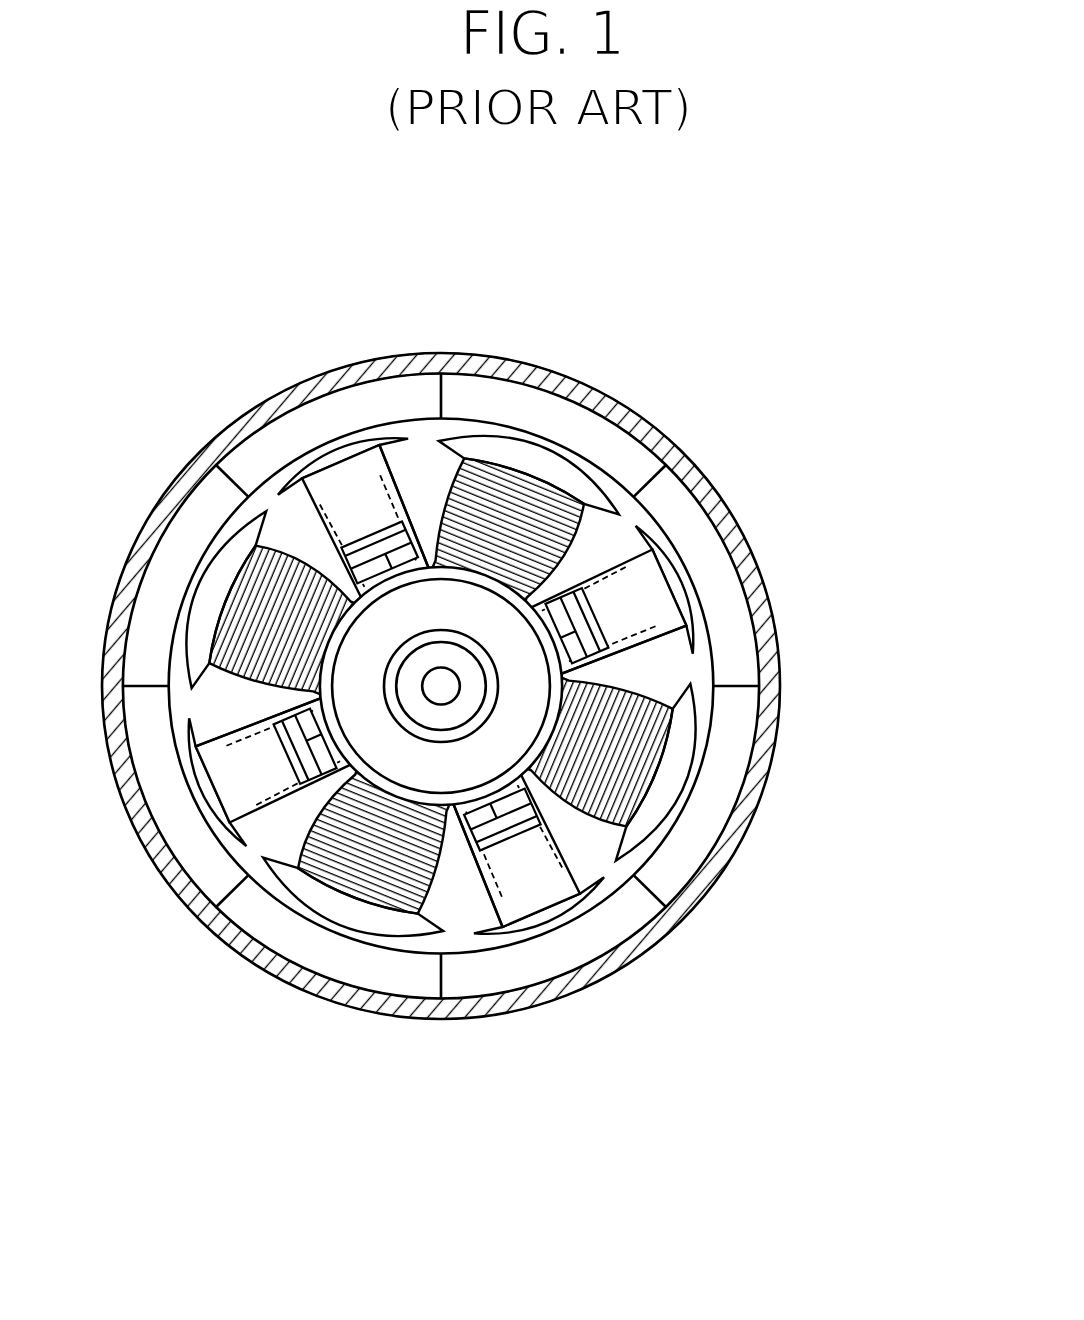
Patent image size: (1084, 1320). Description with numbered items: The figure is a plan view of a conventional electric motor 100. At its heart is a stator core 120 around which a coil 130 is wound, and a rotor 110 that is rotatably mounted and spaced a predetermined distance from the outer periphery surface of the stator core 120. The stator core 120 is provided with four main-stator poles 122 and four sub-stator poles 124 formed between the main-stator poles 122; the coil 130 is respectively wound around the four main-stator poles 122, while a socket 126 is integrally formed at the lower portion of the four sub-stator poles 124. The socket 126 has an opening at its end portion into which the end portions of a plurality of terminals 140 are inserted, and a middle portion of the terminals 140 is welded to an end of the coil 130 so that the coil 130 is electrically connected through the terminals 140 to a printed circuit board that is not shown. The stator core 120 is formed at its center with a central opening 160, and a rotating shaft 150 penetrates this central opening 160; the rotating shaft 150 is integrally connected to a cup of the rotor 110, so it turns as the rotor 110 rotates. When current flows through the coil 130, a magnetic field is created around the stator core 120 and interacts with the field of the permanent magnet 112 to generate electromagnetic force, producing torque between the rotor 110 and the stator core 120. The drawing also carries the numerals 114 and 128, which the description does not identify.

The electric motor 100 is at (523, 268).
The rotor 110 is at (518, 683).
The permanent magnet 112 is at (593, 428).
The yoke ring 114 is at (653, 440).
The stator core 120 is at (543, 809).
The main-stator poles 122 is at (383, 918).
The sub-stator poles 124 is at (513, 908).
The socket 126 is at (516, 826).
The pole tooth 128 is at (575, 895).
The coil 130 is at (558, 535).
The terminals 140 is at (535, 610).
The rotating shaft 150 is at (441, 685).
The central opening 160 is at (480, 710).